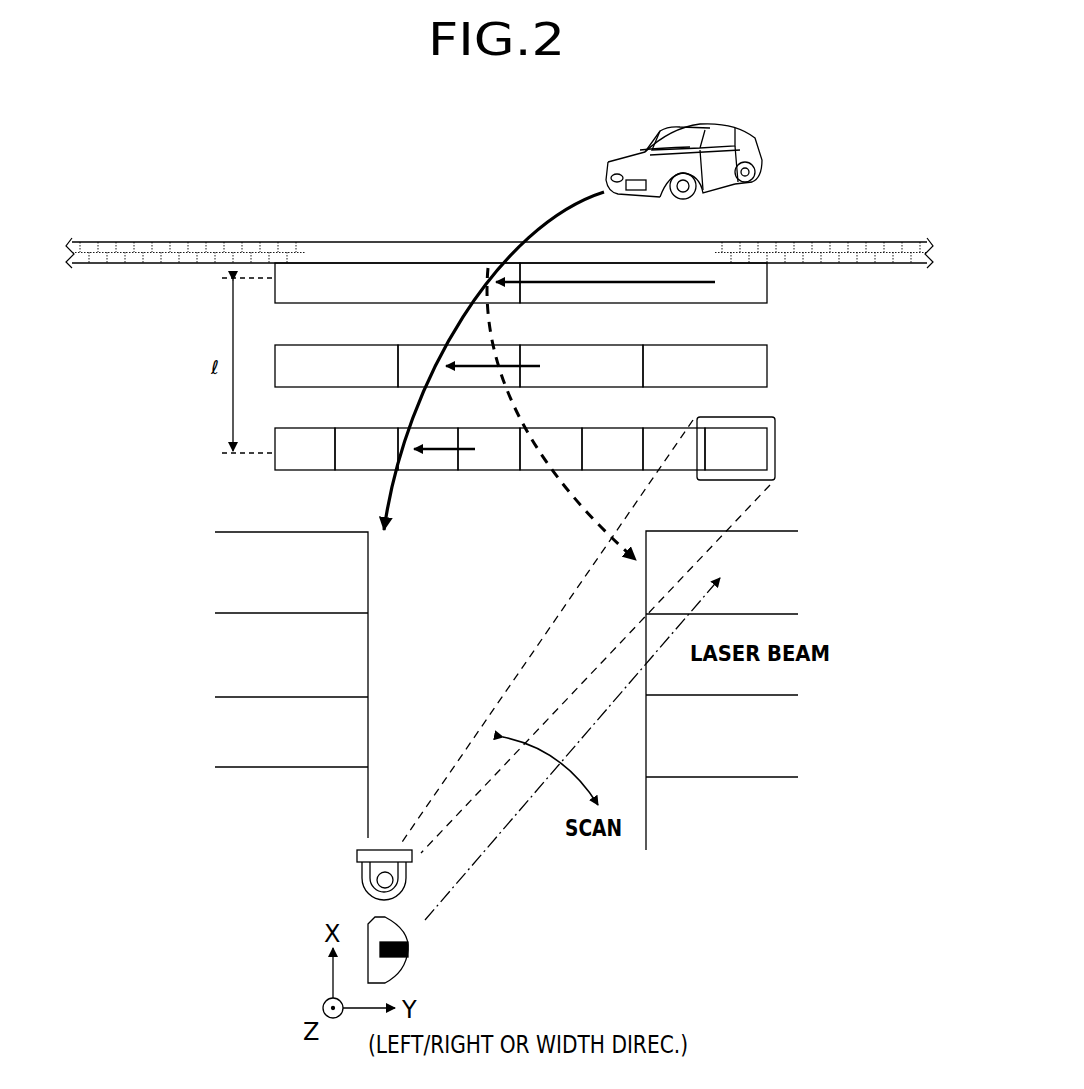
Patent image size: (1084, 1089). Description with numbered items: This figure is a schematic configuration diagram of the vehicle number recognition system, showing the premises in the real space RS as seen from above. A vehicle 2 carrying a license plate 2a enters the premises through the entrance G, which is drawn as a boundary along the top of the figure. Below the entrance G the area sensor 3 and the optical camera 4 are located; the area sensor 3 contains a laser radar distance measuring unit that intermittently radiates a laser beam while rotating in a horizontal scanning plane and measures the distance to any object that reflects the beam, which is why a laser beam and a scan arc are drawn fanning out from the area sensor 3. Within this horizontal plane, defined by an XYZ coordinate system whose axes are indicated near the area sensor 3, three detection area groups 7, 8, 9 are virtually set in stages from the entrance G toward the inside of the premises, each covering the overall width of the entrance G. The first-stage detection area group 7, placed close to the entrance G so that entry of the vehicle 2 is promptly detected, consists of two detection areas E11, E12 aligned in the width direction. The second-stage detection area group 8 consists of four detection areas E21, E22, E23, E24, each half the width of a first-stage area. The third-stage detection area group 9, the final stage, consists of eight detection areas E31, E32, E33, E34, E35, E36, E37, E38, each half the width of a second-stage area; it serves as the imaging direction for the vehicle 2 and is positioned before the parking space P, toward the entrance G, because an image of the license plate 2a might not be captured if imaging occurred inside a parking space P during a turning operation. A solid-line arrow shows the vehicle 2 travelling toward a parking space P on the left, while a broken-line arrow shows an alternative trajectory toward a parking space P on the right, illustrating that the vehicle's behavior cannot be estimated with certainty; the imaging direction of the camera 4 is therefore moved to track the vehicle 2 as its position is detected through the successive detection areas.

The vehicle 2 is at (684, 156).
The license plate 2a is at (622, 196).
The entrance G is at (310, 260).
The first-stage detection area group 7 is at (564, 303).
The second-stage detection area group 8 is at (562, 386).
The third-stage detection area group 9 is at (568, 467).
The detection area E11 is at (398, 303).
The detection area E12 is at (643, 303).
The detection area E21 is at (335, 387).
The detection area E22 is at (458, 387).
The detection area E23 is at (582, 387).
The detection area E24 is at (643, 387).
The detection area E31 is at (305, 470).
The detection area E32 is at (363, 470).
The detection area E33 is at (432, 470).
The detection area E34 is at (483, 470).
The detection area E35 is at (540, 470).
The detection area E36 is at (600, 470).
The detection area E37 is at (665, 470).
The detection area E38 is at (738, 480).
The parking space P is at (248, 805).
The optical camera 4 is at (357, 872).
The area sensor 3 is at (408, 968).
The real space RS is at (578, 876).